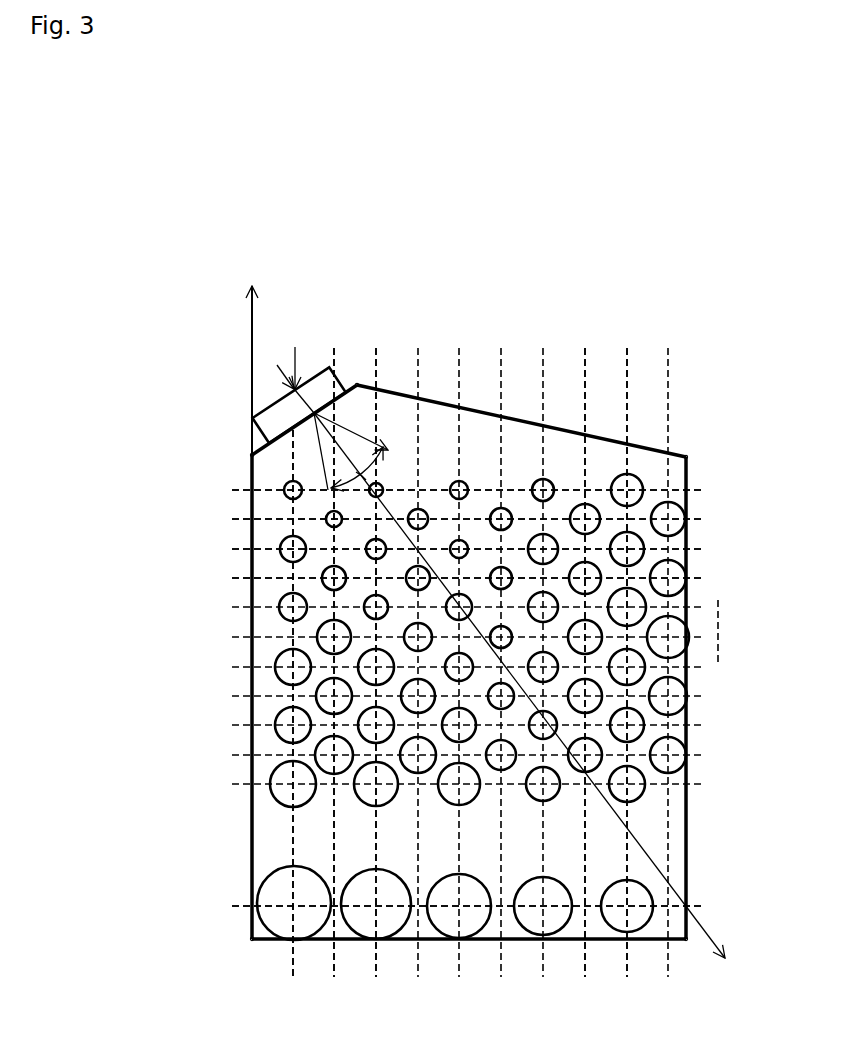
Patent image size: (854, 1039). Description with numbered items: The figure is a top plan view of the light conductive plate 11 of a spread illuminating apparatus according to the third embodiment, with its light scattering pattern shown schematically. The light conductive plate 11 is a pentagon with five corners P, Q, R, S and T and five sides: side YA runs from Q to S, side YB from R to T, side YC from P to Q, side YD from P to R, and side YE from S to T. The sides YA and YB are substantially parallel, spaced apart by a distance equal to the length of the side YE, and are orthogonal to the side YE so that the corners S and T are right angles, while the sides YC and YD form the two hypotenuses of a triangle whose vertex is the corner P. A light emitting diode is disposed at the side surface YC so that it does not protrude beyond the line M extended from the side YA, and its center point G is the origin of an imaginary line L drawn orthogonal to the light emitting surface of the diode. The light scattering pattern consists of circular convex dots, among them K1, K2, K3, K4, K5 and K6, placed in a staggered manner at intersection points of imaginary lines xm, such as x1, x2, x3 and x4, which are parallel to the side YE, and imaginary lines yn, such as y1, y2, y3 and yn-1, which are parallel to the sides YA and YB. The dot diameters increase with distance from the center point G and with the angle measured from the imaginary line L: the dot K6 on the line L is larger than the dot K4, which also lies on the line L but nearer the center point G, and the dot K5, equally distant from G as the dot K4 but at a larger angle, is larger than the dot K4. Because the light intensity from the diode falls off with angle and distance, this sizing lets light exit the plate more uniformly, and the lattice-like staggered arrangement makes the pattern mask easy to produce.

The light conductive plate 11 is at (515, 453).
The line extended from side YA M is at (251, 359).
The center point of the LED G is at (315, 408).
The angle P is at (357, 382).
The angle Q is at (248, 455).
The angle R is at (689, 454).
The angle S is at (250, 937).
The angle T is at (687, 942).
The imaginary line L is at (527, 694).
The side YA is at (248, 566).
The side YB is at (689, 836).
The side YC is at (265, 440).
The side YD is at (437, 405).
The side YE is at (262, 943).
The dot K1 is at (547, 653).
The dot K2 is at (644, 672).
The dot K3 is at (603, 700).
The dot K4 is at (558, 723).
The dot K5 is at (497, 770).
The dot K6 is at (580, 763).
The imaginary line x1 is at (479, 491).
The imaginary line x2 is at (479, 520).
The imaginary line x3 is at (479, 550).
The imaginary line x4 is at (479, 579).
The imaginary lines xm is at (482, 907).
The imaginary line y1 is at (297, 717).
The imaginary line y2 is at (336, 676).
The imaginary line y3 is at (462, 993).
The imaginary line yn-1 is at (583, 676).
The imaginary lines yn is at (636, 676).